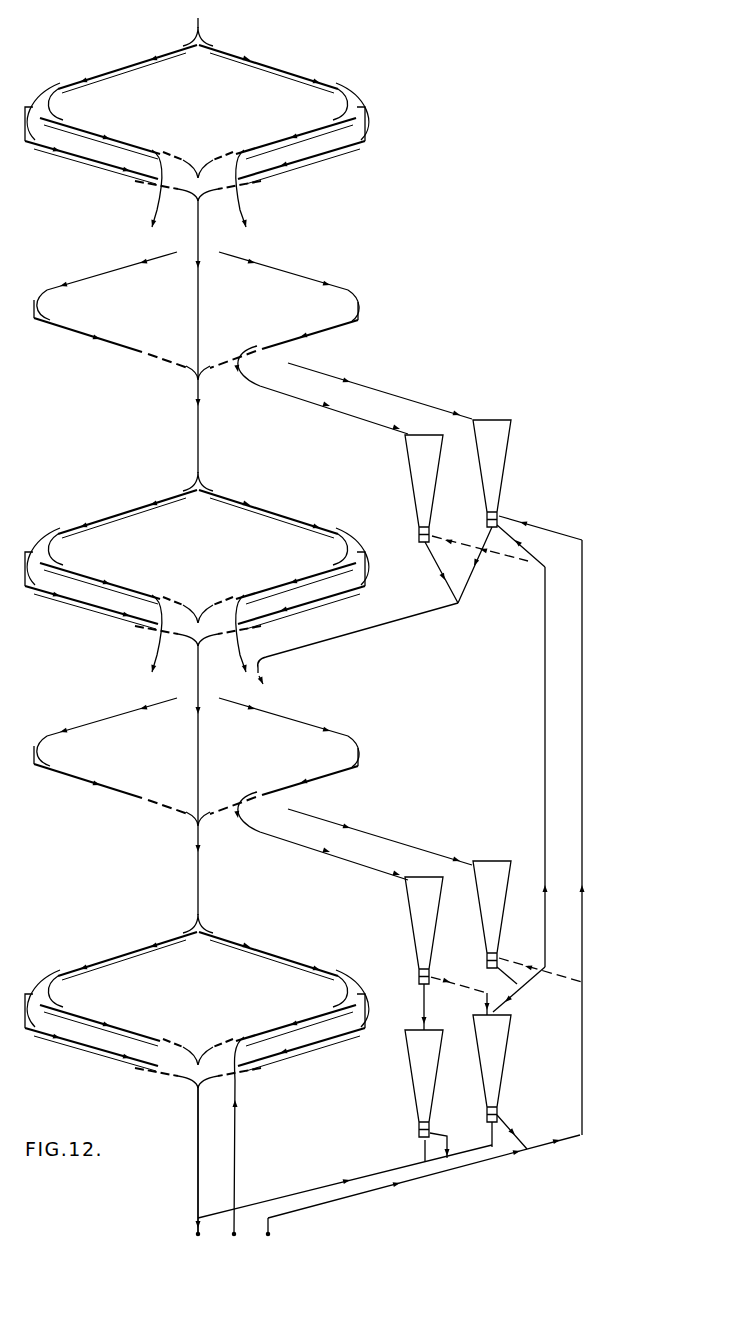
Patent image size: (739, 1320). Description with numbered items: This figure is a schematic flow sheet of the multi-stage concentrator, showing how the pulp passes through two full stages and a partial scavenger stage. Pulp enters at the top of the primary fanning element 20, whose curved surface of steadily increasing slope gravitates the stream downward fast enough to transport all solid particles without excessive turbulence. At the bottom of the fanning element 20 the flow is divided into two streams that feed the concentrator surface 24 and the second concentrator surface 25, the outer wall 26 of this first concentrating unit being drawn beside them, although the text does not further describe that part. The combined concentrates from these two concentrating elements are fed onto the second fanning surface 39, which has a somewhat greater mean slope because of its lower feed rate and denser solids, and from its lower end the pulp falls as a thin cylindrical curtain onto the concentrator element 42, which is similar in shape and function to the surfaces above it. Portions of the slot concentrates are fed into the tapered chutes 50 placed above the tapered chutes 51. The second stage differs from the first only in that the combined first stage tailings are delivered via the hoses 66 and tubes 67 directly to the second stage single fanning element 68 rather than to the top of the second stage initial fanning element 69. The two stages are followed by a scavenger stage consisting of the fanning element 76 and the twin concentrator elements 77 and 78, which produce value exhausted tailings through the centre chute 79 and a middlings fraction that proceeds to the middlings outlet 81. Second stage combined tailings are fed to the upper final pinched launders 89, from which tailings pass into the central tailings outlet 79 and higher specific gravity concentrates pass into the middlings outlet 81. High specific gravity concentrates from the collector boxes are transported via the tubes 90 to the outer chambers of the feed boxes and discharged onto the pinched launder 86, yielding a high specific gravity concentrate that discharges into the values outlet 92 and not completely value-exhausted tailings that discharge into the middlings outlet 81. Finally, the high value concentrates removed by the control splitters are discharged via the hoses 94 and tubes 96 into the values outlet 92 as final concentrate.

The fanning element 20 is at (218, 127).
The concentrator surface 24 is at (315, 133).
The second concentrator surface 25 is at (298, 163).
The outer bracket wall 26 is at (367, 122).
The second fanning surface 39 is at (253, 329).
The concentrator element 42 is at (318, 334).
The tapered chutes 50 is at (492, 473).
The tapered chutes 51 is at (424, 488).
The hoses 66 is at (443, 583).
The tubes 67 is at (370, 628).
The second stage initial fanning element 69 is at (252, 502).
The second stage single fanning element 68 is at (257, 708).
The tubes 90 is at (545, 755).
The hoses 94 is at (582, 750).
The fanning element 76 is at (197, 997).
The concentrator element 77 is at (287, 1022).
The concentrator element 78 is at (310, 1045).
The upper final pinched launders 89 is at (427, 1095).
The pinched launder 86 is at (500, 1082).
The centre chute 79 is at (195, 1222).
The middlings outlet 81 is at (232, 1228).
The values outlet 92 is at (270, 1223).
The tubes 96 is at (393, 1187).